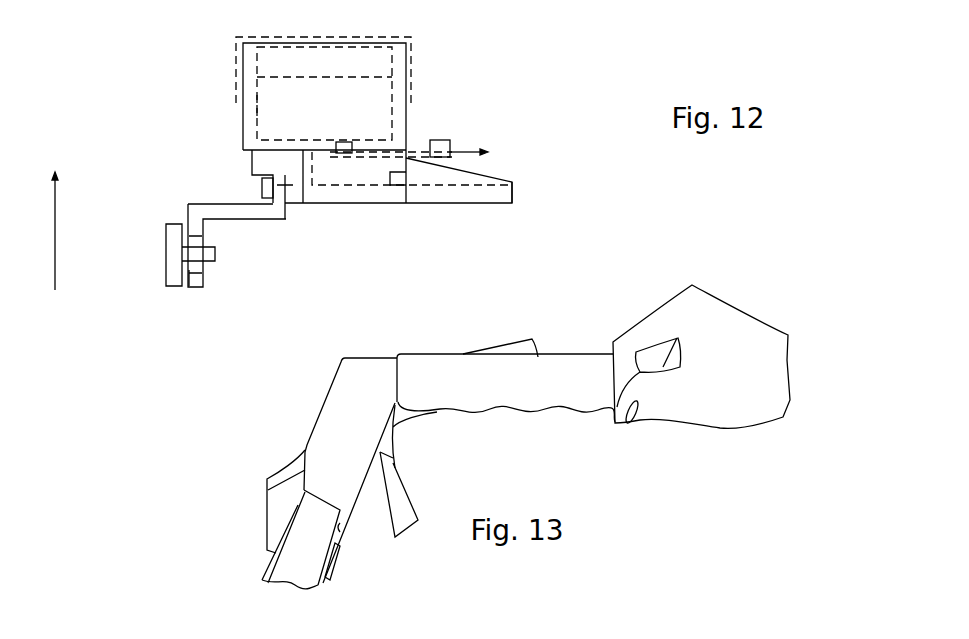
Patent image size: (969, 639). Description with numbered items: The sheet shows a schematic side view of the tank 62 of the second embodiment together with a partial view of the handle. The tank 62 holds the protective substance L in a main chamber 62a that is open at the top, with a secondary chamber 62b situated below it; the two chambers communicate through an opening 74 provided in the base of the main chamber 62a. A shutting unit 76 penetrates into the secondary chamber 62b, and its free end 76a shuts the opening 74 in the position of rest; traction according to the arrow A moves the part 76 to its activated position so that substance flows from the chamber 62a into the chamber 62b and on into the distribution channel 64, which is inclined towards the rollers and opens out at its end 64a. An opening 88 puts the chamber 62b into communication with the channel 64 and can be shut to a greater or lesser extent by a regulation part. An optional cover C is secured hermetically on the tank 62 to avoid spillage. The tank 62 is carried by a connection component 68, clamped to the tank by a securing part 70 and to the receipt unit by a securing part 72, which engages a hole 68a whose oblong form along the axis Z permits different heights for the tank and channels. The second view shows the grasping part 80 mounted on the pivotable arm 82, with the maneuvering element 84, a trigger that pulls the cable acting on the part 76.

In FIG. 12, the tank 62 is at (236, 78).
In FIG. 12, the main chamber 62a is at (251, 106).
In FIG. 12, the secondary chamber 62b is at (339, 194).
In FIG. 12, the distribution channel 64 is at (470, 177).
In FIG. 12, the end of channel 64a is at (513, 185).
In FIG. 12, the connection component 68 is at (202, 208).
In FIG. 12, the hole 68a is at (200, 279).
In FIG. 12, the securing part 70 is at (261, 188).
In FIG. 12, the securing part 72 is at (167, 253).
In FIG. 12, the opening 74 is at (355, 147).
In FIG. 12, the shutting unit 76 is at (459, 145).
In FIG. 12, the free end 76a is at (349, 165).
In FIG. 12, the opening 88 is at (399, 178).
In FIG. 12, the arrow A is at (463, 153).
In FIG. 12, the cover C is at (388, 37).
In FIG. 12, the protective substance L is at (370, 96).
In FIG. 12, the axis Z is at (45, 226).
In FIG. 13, the grasping part 80 is at (570, 352).
In FIG. 13, the arm 82 is at (305, 432).
In FIG. 13, the maneuvering element 84 is at (355, 491).